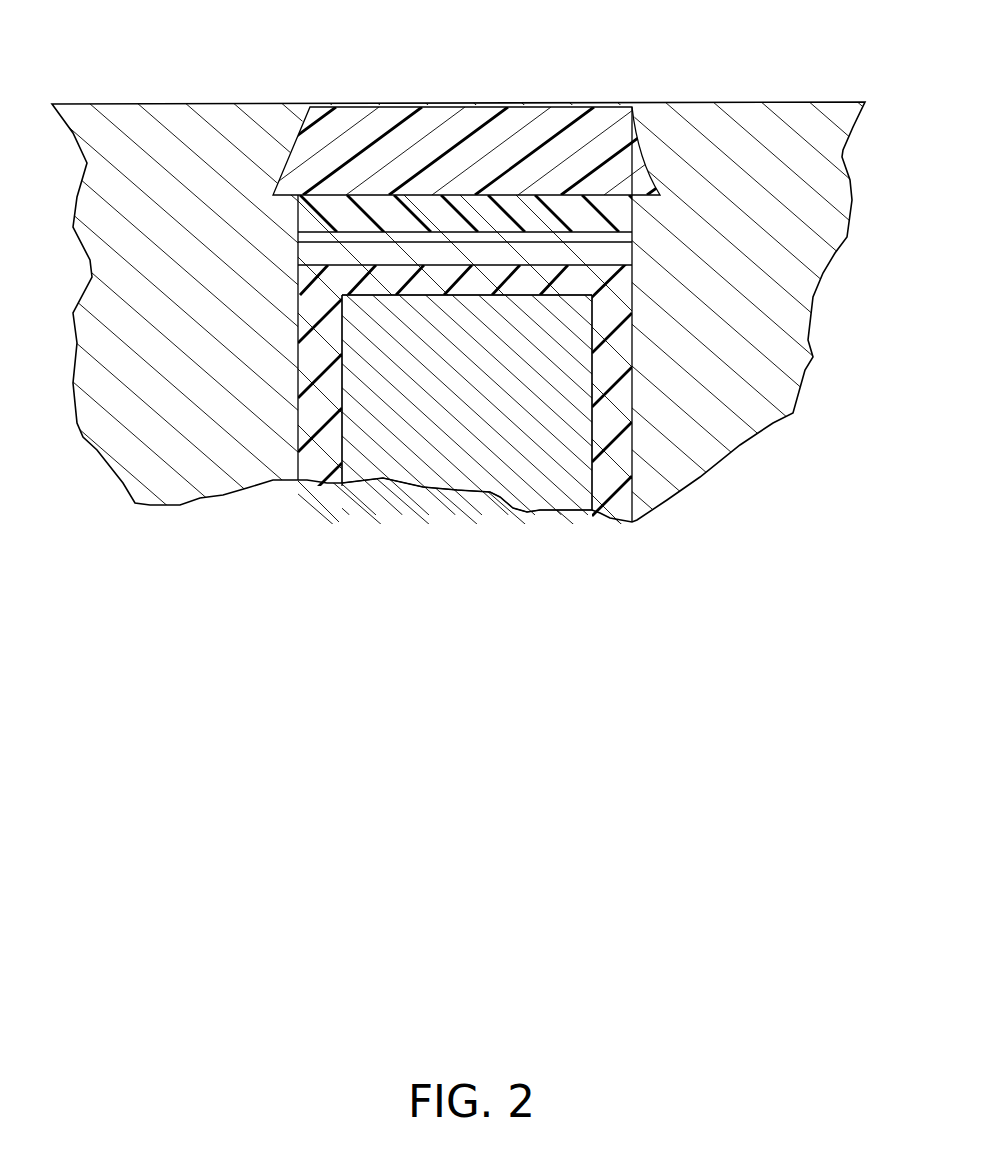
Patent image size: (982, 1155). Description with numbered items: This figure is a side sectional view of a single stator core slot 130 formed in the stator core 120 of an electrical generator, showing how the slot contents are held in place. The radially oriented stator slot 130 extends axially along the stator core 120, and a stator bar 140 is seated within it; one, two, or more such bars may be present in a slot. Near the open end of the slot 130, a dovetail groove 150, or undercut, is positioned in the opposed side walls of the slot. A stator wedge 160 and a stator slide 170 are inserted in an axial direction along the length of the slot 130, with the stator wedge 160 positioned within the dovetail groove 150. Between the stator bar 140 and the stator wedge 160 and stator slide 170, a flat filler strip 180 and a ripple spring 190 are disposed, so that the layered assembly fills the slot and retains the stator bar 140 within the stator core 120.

The stator core 120 is at (668, 108).
The stator slot 130 is at (300, 116).
The stator bar 140 is at (300, 432).
The dovetail groove 150 is at (655, 195).
The stator wedge 160 is at (555, 117).
The stator slide 170 is at (636, 212).
The flat filler strip 180 is at (298, 266).
The ripple spring 190 is at (634, 245).